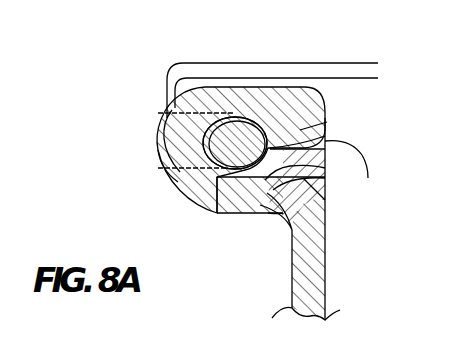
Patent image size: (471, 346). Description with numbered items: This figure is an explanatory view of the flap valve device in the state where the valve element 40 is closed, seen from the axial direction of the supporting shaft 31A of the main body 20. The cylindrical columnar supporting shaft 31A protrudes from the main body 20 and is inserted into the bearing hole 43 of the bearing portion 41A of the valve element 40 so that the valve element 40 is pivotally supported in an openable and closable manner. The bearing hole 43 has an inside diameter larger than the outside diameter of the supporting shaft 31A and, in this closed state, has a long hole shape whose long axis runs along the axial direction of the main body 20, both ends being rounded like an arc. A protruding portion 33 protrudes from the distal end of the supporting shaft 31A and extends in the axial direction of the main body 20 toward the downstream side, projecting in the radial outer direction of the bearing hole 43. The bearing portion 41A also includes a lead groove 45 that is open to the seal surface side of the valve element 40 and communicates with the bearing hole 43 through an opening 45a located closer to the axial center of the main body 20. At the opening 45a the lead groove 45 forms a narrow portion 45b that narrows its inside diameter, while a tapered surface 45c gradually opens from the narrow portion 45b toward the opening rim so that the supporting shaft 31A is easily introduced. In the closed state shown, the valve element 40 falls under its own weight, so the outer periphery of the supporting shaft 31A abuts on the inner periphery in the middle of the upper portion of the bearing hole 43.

The main body 20 is at (358, 88).
The bearing portion 41A is at (163, 128).
The supporting shaft 31A is at (237, 117).
The protruding portion 33 is at (162, 165).
The bearing hole 43 is at (222, 172).
The lead groove 45 is at (327, 167).
The opening 45a is at (266, 172).
The narrow portion 45b is at (327, 150).
The tapered surface 45c is at (327, 122).
The valve element 40 is at (326, 289).